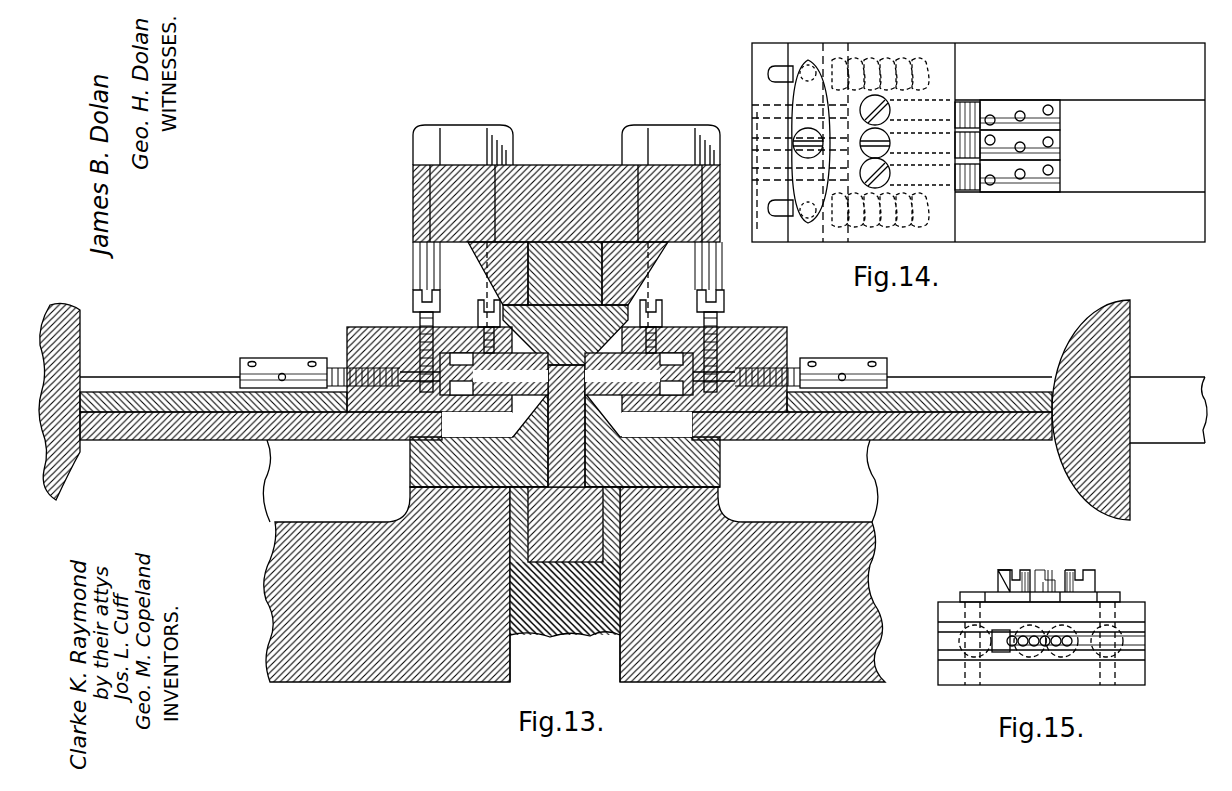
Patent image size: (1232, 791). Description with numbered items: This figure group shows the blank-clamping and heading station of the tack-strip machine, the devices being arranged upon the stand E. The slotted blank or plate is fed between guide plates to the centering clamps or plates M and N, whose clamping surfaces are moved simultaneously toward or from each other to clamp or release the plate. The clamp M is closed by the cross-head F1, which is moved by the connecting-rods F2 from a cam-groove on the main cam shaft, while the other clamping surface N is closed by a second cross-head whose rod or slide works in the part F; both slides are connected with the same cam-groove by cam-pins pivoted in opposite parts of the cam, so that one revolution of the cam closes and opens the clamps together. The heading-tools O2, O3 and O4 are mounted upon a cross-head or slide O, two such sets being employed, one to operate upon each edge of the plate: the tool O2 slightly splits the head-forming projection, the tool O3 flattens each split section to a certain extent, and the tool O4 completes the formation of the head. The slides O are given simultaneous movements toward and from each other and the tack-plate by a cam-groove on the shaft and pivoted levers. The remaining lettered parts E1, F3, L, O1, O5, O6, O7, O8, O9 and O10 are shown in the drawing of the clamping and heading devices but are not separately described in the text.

In FIG. 13, the stand E is at (352, 500).
In FIG. 13, the frame end flange E' E1 is at (61, 401).
In FIG. 13, the part (slide) F is at (575, 670).
In FIG. 13, the cross-head F1 is at (566, 183).
In FIG. 13, the connecting-rods F2 is at (470, 272).
In FIG. 13, the standard base F3 is at (565, 598).
In FIG. 13, the lower die block L is at (565, 440).
In FIG. 13, the centering clamp (plate) M is at (565, 463).
In FIG. 13, the centering clamp (plate) N is at (568, 303).
In FIG. 13, the cross-head (slide) O is at (566, 371).
In FIG. 14, the cross-head (slide) O is at (978, 142).
In FIG. 14, the carrier body O' O1 is at (779, 143).
In FIG. 15, the carrier body O' O1 is at (1052, 638).
In FIG. 15, the heading-tool O2 is at (1041, 652).
In FIG. 15, the heading-tool O3 is at (1039, 657).
In FIG. 15, the heading-tool O4 is at (1010, 650).
In FIG. 13, the set screw O5 is at (480, 304).
In FIG. 15, the set screw O5 is at (1046, 570).
In FIG. 13, the screw / spring O6 is at (413, 298).
In FIG. 14, the screw / spring O6 is at (885, 45).
In FIG. 15, the screw / spring O6 is at (1051, 571).
In FIG. 13, the sleeve O7 is at (563, 366).
In FIG. 14, the sleeve O7 is at (1008, 106).
In FIG. 14, the disk O8 is at (841, 141).
In FIG. 14, the guide O9 is at (804, 222).
In FIG. 14, the guide O10 is at (850, 242).